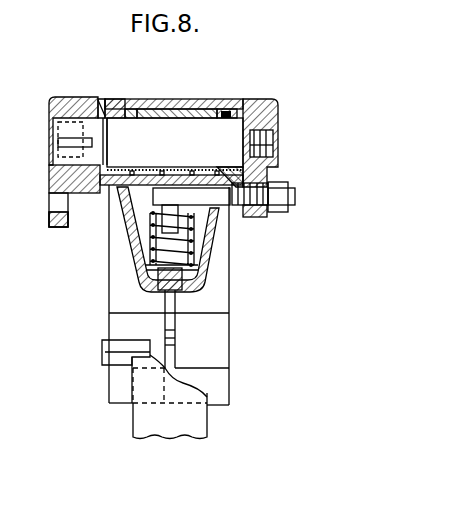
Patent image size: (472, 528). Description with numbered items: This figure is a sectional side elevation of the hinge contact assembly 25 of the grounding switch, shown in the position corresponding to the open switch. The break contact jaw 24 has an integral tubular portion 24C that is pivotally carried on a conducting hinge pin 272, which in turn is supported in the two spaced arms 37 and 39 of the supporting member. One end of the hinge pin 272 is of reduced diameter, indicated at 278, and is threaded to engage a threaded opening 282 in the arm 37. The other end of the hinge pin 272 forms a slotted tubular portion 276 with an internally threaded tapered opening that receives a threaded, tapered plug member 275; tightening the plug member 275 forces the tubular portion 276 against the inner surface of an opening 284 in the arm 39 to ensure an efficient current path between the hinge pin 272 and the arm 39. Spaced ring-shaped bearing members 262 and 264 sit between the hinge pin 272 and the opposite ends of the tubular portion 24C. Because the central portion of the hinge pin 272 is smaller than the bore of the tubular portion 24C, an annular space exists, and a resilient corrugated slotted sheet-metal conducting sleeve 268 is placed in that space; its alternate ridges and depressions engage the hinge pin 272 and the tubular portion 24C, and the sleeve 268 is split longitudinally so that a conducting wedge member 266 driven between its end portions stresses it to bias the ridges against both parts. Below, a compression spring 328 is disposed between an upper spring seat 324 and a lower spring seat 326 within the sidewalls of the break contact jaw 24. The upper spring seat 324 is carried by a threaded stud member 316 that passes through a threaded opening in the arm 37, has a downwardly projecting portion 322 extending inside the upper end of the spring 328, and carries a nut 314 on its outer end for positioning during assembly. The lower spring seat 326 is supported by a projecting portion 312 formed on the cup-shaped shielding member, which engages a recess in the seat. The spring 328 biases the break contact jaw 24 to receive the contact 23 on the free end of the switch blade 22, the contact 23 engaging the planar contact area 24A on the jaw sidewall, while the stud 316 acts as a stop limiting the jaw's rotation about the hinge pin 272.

The switch blade 22 is at (197, 425).
The contact 23 is at (103, 347).
The break contact jaw 24 is at (232, 285).
The planar contact area 24A is at (220, 337).
The tubular portion 24C is at (133, 103).
The hinge contact assembly 25 is at (53, 271).
The arm 37 is at (257, 110).
The arm 39 is at (75, 99).
The ring-shaped bearing member 262 is at (107, 100).
The ring-shaped bearing member 264 is at (228, 113).
The conducting wedge member 266 is at (183, 110).
The conducting sleeve 268 is at (117, 187).
The hinge pin 272 is at (153, 120).
The plug member 275 is at (53, 142).
The tubular portion 276 is at (57, 103).
The reduced diameter end 278 is at (278, 133).
The threaded opening 282 is at (278, 152).
The opening 284 is at (53, 162).
The projecting portion 312 is at (163, 287).
The nut 314 is at (283, 215).
The threaded stud member 316 is at (243, 215).
The downwardly projecting portion 322 is at (170, 210).
The upper spring seat 324 is at (140, 213).
The lower spring seat 326 is at (130, 282).
The compression spring 328 is at (143, 257).